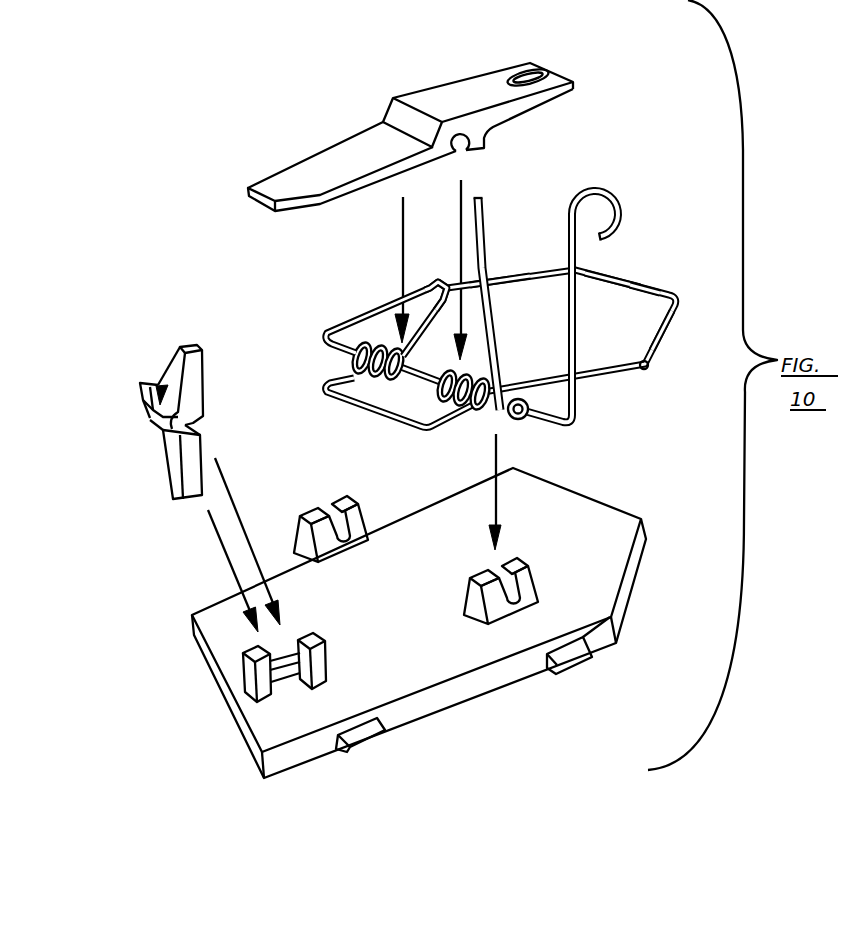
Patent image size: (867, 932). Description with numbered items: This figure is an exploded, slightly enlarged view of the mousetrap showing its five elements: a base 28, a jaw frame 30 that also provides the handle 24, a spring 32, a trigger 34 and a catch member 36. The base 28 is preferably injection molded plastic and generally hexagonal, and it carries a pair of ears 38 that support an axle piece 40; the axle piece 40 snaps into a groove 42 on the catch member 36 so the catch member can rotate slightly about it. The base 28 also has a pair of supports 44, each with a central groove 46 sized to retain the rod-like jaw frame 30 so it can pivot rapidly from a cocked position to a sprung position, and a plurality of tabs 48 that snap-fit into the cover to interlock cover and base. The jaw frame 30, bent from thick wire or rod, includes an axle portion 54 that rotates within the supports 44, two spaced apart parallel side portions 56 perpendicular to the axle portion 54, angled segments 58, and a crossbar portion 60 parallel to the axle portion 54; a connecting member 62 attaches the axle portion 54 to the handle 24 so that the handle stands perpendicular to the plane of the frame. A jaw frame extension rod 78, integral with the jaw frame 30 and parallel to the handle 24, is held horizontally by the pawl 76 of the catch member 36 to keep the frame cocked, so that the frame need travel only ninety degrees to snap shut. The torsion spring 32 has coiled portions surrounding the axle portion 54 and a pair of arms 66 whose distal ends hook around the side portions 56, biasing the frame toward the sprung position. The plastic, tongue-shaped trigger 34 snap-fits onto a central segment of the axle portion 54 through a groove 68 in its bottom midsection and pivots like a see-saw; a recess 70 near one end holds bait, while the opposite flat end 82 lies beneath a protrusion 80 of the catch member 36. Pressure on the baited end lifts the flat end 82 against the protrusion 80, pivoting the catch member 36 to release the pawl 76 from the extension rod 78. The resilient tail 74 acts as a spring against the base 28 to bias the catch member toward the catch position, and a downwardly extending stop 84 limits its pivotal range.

The handle 24 is at (609, 188).
The base 28 is at (427, 720).
The jaw frame 30 is at (628, 281).
The spring 32 is at (325, 384).
The trigger 34 is at (422, 116).
The catch member 36 is at (121, 412).
The ears 38 is at (289, 740).
The axle piece 40 is at (283, 682).
The groove 42 is at (160, 431).
The supports 44 is at (506, 624).
The central groove 46 is at (353, 540).
The tabs 48 is at (372, 745).
The axle portion 54 is at (412, 376).
The side portions 56 is at (497, 308).
The angled segments 58 is at (537, 280).
The crossbar portion 60 is at (651, 284).
The connecting member 62 is at (532, 417).
The arms 66 is at (445, 308).
The groove 68 is at (465, 157).
The recess 70 is at (538, 71).
The tail 74 is at (181, 505).
The pawl 76 is at (160, 385).
The jaw frame extension rod 78 is at (485, 204).
The protrusion 80 is at (148, 392).
The flat end 82 is at (246, 195).
The stop 84 is at (146, 417).